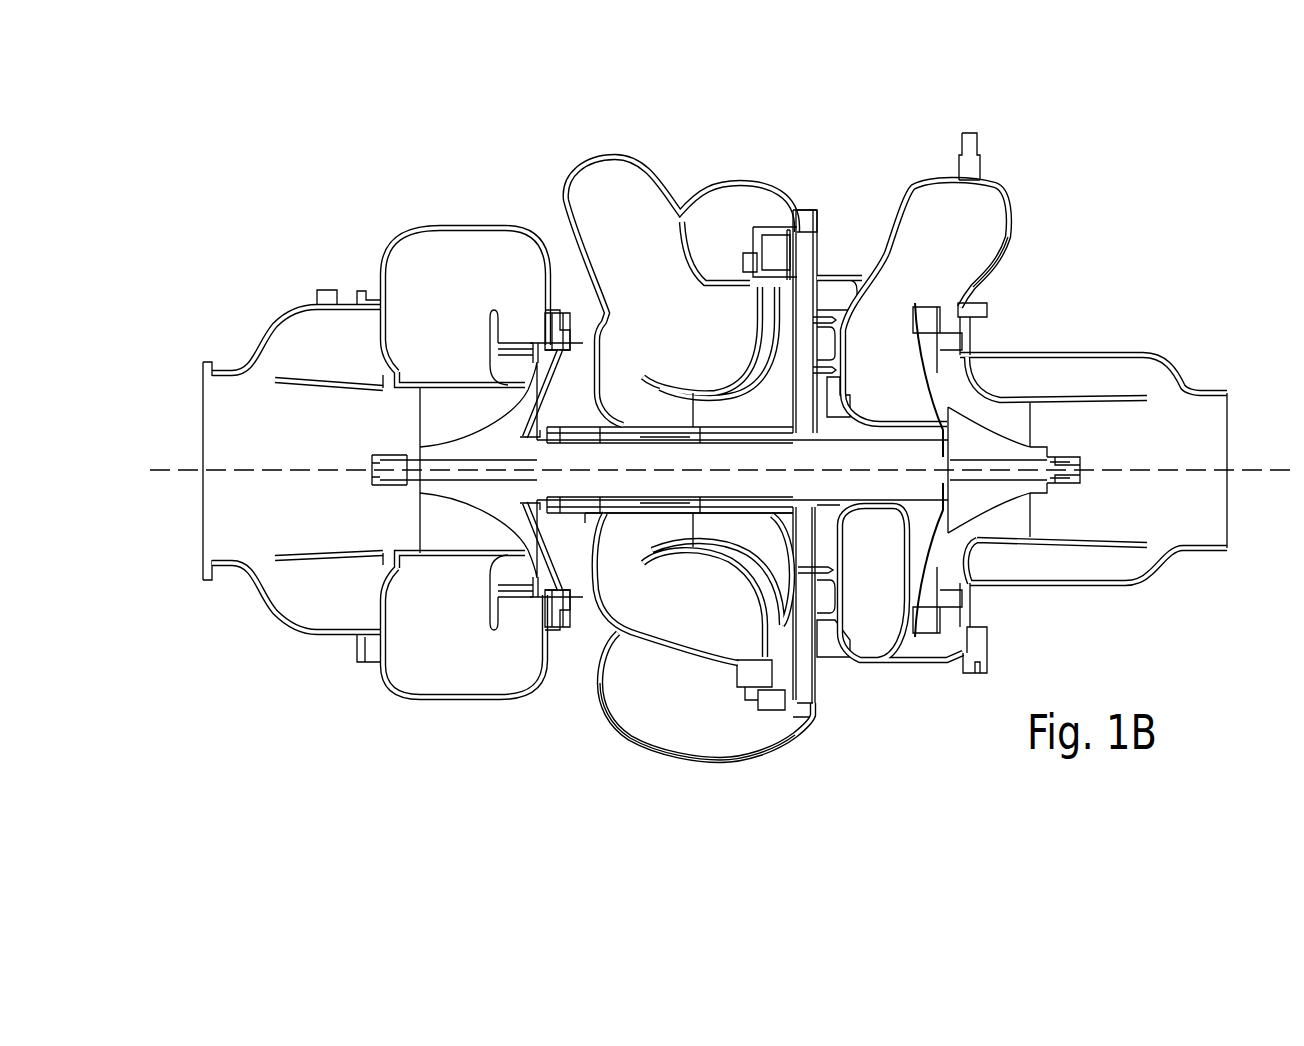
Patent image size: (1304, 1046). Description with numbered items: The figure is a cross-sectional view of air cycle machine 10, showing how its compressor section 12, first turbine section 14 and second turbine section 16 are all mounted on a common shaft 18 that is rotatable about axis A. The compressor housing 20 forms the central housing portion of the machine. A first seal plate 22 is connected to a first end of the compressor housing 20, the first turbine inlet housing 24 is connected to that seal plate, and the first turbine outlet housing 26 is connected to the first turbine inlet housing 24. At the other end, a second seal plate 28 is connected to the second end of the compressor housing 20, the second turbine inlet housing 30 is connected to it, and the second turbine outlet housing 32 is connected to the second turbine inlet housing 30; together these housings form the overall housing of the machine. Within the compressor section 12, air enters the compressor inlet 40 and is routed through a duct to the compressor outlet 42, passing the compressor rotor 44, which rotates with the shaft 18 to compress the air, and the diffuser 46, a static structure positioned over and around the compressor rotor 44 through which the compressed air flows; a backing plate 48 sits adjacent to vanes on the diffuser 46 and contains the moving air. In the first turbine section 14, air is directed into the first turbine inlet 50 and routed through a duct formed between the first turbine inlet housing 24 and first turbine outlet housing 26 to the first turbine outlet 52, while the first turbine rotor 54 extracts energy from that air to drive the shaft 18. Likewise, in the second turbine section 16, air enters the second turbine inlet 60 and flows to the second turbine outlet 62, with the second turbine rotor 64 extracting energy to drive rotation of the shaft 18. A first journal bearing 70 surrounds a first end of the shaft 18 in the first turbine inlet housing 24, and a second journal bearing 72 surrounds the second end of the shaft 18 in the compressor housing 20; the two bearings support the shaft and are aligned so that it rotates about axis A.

The air cycle machine 10 is at (232, 192).
The compressor section 12 is at (700, 142).
The first turbine section 14 is at (1088, 217).
The second turbine section 16 is at (388, 190).
The shaft 18 is at (917, 483).
The compressor housing 20 is at (747, 760).
The first seal plate 22 is at (813, 245).
The first turbine inlet housing 24 is at (1012, 217).
The first turbine outlet housing 26 is at (1107, 353).
The second seal plate 28 is at (570, 632).
The second turbine inlet housing 30 is at (417, 693).
The second turbine outlet housing 32 is at (297, 627).
The compressor inlet 40 is at (607, 193).
The compressor outlet 42 is at (688, 723).
The compressor rotor 44 is at (707, 410).
The diffuser 46 is at (768, 285).
The backing plate 48 is at (787, 257).
The first turbine inlet 50 is at (943, 252).
The first turbine outlet 52 is at (1203, 515).
The first turbine rotor 54 is at (1015, 422).
The second turbine inlet 60 is at (470, 260).
The second turbine outlet 62 is at (227, 410).
The second turbine rotor 64 is at (443, 420).
The first journal bearing 70 is at (888, 507).
The second journal bearing 72 is at (590, 513).
The axis A is at (1243, 467).